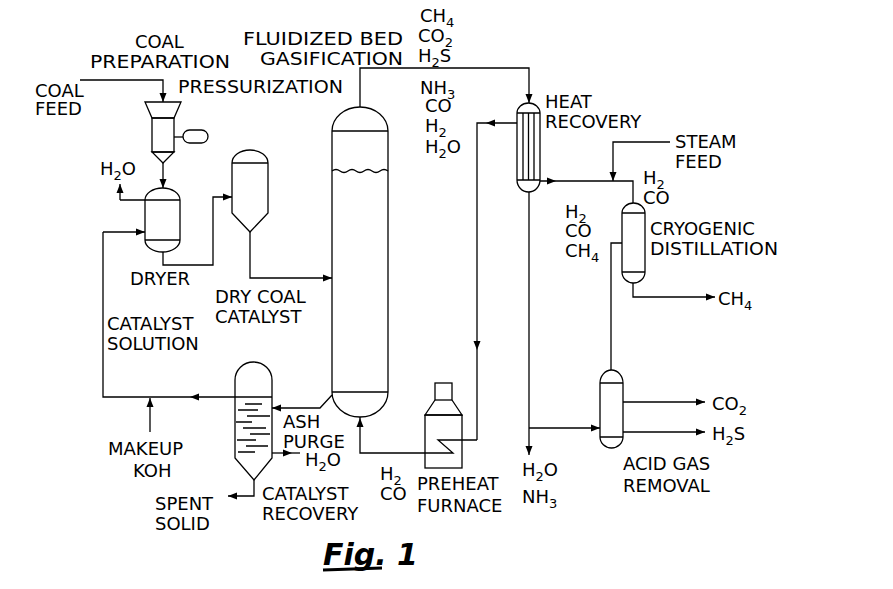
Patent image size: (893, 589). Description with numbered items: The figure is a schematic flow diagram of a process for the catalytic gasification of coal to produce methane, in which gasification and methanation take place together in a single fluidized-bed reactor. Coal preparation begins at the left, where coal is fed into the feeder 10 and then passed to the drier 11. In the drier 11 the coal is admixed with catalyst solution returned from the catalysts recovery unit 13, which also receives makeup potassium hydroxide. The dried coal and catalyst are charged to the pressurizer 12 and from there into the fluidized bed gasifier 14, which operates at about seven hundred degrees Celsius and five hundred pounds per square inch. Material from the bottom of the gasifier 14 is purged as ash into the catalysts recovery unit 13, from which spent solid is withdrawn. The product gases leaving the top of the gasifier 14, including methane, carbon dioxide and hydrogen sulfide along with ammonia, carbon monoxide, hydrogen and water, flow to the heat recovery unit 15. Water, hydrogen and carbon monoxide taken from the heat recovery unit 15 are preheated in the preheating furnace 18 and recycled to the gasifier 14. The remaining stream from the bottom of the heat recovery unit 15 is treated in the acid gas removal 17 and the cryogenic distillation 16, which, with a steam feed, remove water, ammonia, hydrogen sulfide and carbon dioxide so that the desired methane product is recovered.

The feeder 10 is at (150, 122).
The drier 11 is at (143, 215).
The pressurizer 12 is at (270, 170).
The catalysts recovery unit 13 is at (273, 377).
The fluidized bed gasifier 14 is at (389, 203).
The heat recovery unit 15 is at (516, 153).
The cryogenic distillation 16 is at (646, 268).
The acid gas removal 17 is at (600, 391).
The preheating furnace 18 is at (435, 398).